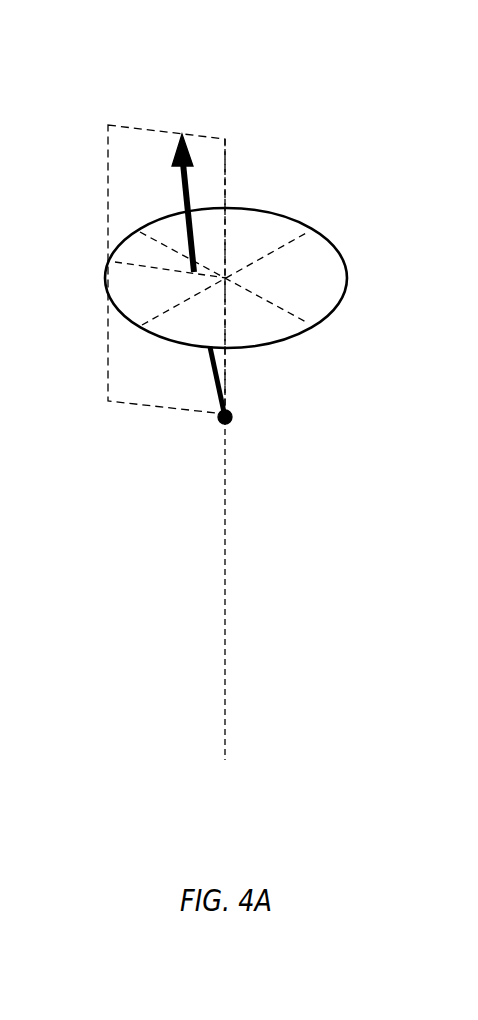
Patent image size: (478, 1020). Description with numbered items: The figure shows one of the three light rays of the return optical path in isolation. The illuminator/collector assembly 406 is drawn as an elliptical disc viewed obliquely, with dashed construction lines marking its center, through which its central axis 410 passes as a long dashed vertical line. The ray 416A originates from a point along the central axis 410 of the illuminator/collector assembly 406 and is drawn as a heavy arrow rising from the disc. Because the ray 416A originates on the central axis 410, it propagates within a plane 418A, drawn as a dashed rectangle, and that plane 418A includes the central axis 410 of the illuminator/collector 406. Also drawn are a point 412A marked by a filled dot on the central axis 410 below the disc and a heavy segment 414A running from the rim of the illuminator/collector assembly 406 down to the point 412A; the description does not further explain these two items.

The illuminator/collector assembly 406 is at (348, 278).
The central axis 410 is at (225, 688).
The point on axis 412A is at (232, 416).
The line segment 414A is at (221, 379).
The ray 416A is at (190, 186).
The plane 418A is at (135, 127).